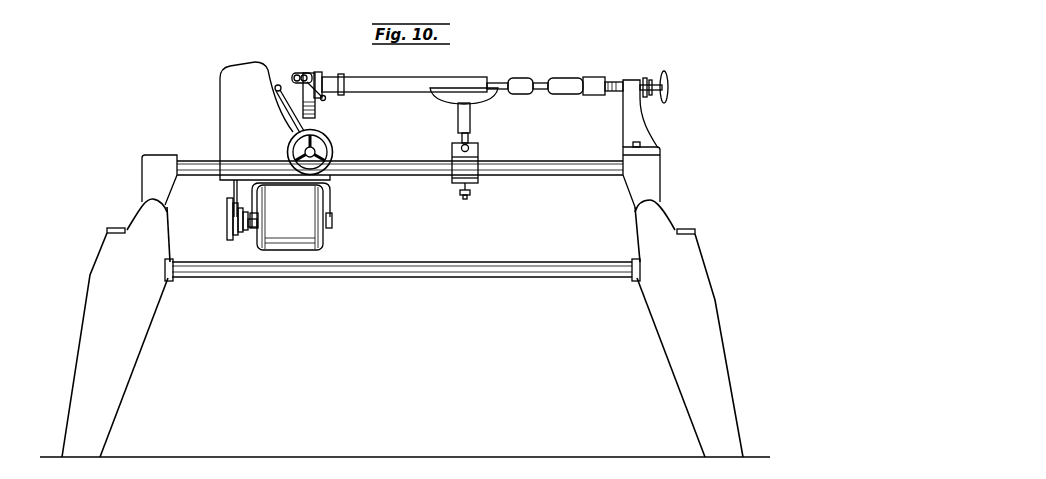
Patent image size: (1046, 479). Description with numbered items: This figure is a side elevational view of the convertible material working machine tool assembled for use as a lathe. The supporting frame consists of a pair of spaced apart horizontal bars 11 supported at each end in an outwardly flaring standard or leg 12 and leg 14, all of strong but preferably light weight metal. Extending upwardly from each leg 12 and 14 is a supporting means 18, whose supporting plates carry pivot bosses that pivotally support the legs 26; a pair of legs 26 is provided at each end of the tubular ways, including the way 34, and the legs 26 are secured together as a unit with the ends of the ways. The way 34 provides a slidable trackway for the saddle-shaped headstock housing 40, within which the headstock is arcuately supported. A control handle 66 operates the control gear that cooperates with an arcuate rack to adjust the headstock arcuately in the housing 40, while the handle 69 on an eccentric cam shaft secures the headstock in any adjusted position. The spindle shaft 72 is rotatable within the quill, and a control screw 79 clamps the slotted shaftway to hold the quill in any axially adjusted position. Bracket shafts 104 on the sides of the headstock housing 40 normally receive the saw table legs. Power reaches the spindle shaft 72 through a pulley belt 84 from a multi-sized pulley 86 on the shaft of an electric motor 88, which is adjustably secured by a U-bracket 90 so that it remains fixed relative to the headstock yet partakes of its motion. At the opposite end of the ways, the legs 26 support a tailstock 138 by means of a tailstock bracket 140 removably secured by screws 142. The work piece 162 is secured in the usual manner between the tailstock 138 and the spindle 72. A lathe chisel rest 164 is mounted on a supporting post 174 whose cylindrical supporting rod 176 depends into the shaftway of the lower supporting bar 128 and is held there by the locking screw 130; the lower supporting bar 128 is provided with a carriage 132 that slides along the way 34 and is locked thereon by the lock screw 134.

The horizontal bars 11 is at (446, 278).
The leg 12 is at (142, 340).
The leg 14 is at (662, 338).
The supporting means 18 is at (113, 227).
The leg 26 is at (149, 162).
The tubular way 34 is at (552, 175).
The headstock housing 40 is at (223, 115).
The control handle 66 is at (288, 147).
The handle 69 is at (275, 93).
The spindle shaft 72 is at (332, 80).
The control screw 79 is at (303, 74).
The pulley belt 84 is at (233, 188).
The multi-sized pulley 86 is at (228, 225).
The electric motor 88 is at (313, 245).
The U-bracket 90 is at (325, 200).
The bracket shaft 104 is at (315, 117).
The lower supporting bar 128 is at (452, 153).
The locking screw 130 is at (462, 146).
The carriage 132 is at (472, 165).
The lock screw 134 is at (465, 196).
The tailstock 138 is at (611, 83).
The tailstock bracket 140 is at (624, 113).
The screws 142 is at (640, 145).
The work piece 162 is at (473, 82).
The lathe chisel rest 164 is at (452, 98).
The supporting post 174 is at (470, 117).
The cylindrical supporting rod 176 is at (470, 138).